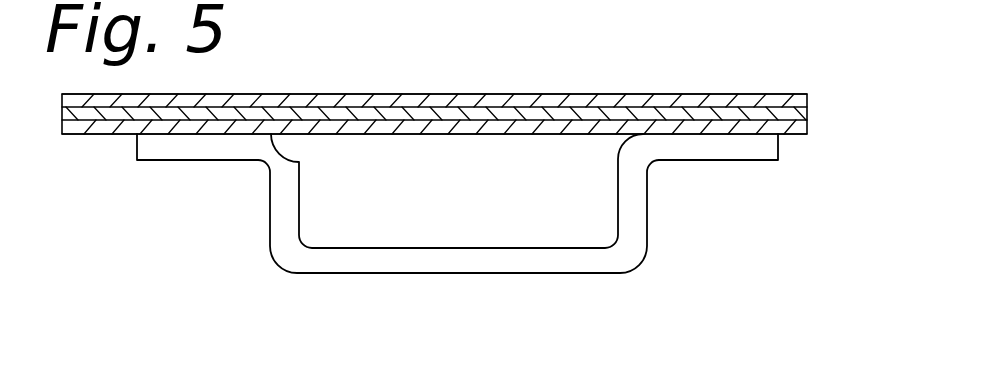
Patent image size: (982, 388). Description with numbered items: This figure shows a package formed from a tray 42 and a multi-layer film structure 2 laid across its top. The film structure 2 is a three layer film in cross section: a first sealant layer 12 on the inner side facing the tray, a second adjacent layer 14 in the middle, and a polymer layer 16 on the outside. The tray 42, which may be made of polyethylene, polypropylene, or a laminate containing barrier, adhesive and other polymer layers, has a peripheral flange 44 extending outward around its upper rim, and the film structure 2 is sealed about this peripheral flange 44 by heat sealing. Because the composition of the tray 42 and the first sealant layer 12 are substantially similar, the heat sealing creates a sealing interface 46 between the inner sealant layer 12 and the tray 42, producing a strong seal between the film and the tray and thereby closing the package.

The multi-layer film structure 2 is at (525, 88).
The first sealant layer 12 is at (810, 128).
The second adjacent layer 14 is at (810, 110).
The polymer layer 16 is at (808, 97).
The tray 42 is at (625, 273).
The peripheral flange 44 is at (172, 160).
The sealing interface 46 is at (720, 134).